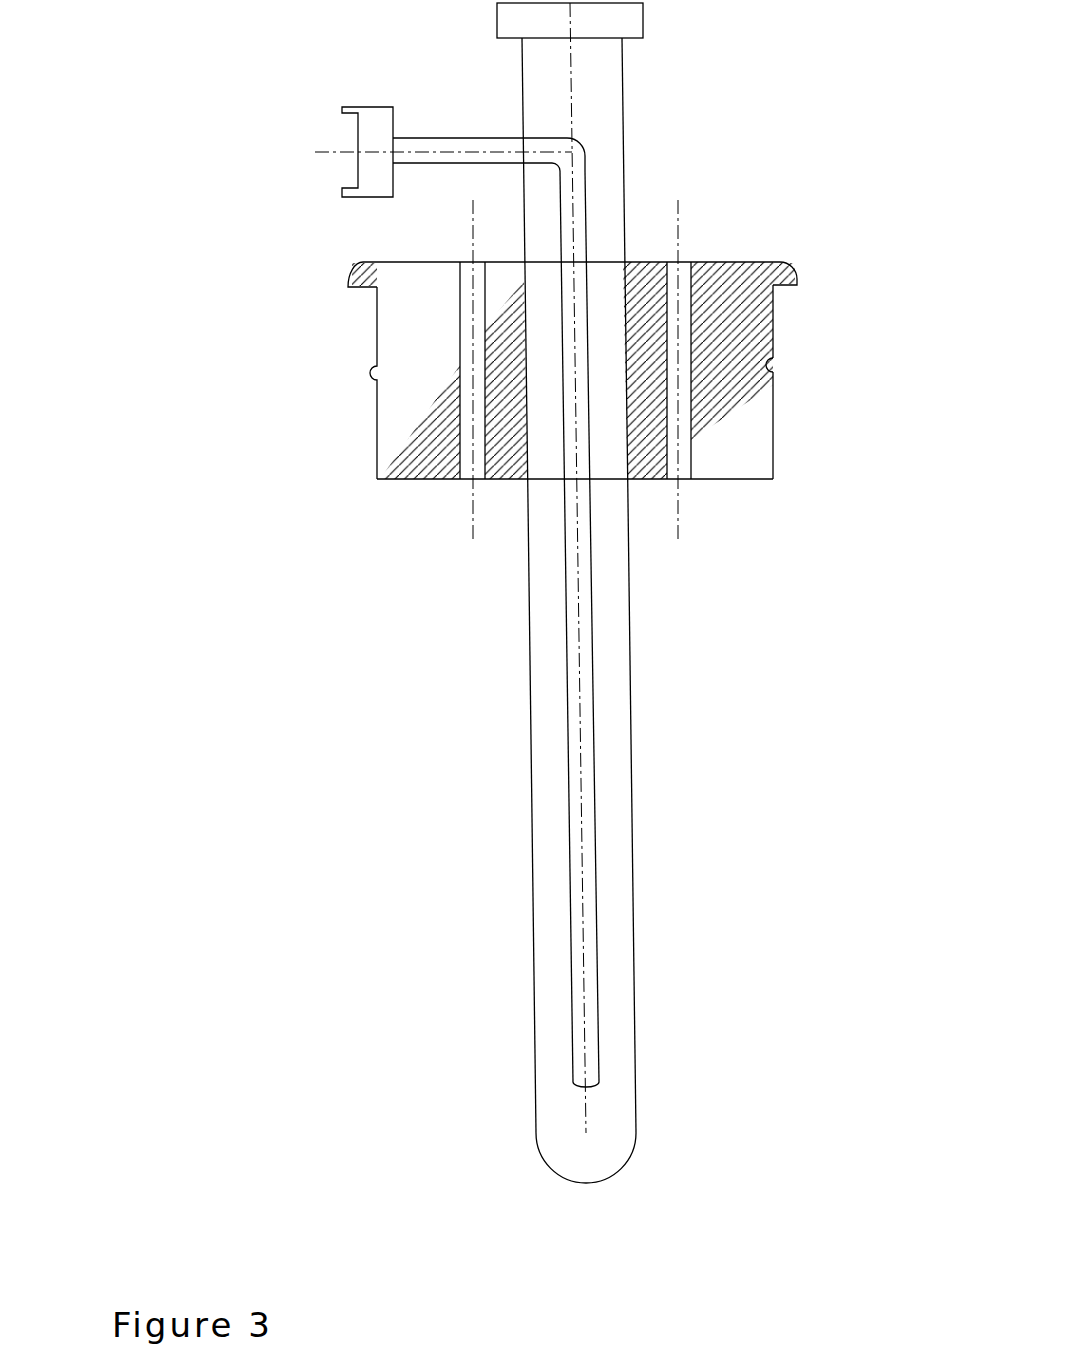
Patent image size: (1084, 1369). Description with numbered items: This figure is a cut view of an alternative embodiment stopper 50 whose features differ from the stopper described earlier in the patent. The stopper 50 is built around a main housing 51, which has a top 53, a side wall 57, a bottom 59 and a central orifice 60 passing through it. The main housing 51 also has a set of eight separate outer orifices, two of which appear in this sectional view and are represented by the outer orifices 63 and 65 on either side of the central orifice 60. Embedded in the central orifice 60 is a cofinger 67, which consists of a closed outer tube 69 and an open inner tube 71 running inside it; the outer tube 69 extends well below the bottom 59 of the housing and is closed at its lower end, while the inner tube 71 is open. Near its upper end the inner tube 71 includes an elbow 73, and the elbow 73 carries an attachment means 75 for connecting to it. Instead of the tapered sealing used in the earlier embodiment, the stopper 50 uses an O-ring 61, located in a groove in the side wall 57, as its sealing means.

The stopper 50 is at (333, 262).
The main housing 51 is at (377, 412).
The top 53 is at (745, 260).
The side wall 57 is at (777, 308).
The bottom 59 is at (740, 480).
The central orifice 60 is at (625, 260).
The O-ring 61 is at (777, 365).
The outer orifice 63 is at (472, 262).
The outer orifice 65 is at (680, 480).
The cofinger 67 is at (622, 118).
The closed outer tube 69 is at (631, 732).
The open inner tube 71 is at (598, 995).
The elbow 73 is at (482, 137).
The attachment means 75 is at (367, 105).